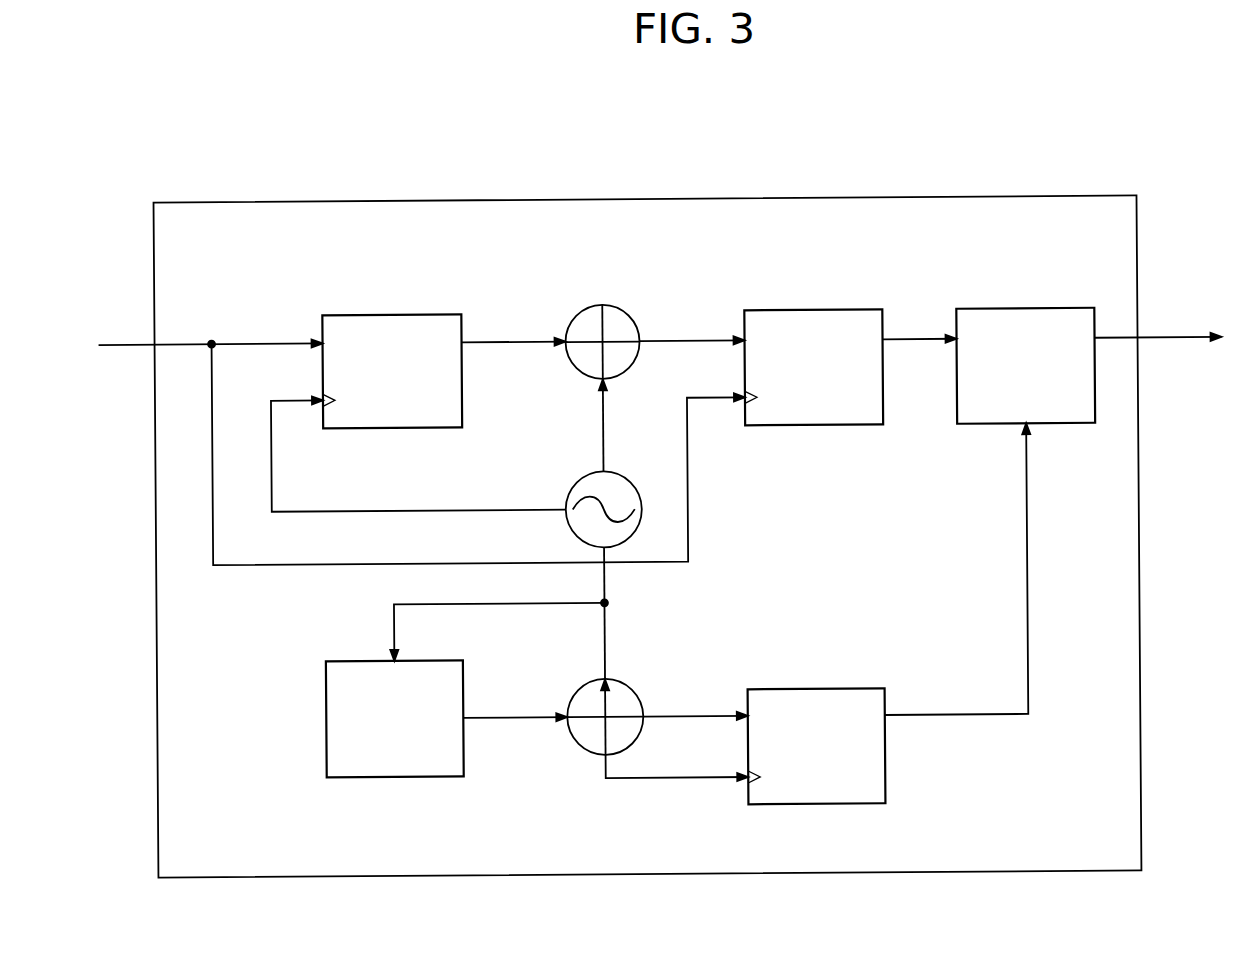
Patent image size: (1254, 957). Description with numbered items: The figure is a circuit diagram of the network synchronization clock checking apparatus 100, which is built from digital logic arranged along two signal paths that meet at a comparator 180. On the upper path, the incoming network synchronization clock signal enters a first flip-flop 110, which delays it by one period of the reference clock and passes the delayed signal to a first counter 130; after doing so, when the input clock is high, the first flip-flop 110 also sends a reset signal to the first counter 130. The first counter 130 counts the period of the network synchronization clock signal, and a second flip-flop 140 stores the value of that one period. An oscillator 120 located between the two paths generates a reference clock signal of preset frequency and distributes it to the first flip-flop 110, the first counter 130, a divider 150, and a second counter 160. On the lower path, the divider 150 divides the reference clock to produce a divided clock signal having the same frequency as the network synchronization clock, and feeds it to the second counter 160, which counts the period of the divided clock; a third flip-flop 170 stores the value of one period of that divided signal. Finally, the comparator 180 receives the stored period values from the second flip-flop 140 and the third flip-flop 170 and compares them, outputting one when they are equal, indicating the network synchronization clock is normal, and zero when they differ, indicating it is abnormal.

The network synchronization clock checking apparatus 100 is at (995, 199).
The first flip-flop 110 is at (428, 313).
The oscillator 120 is at (632, 482).
The first counter 130 is at (630, 315).
The second flip-flop 140 is at (850, 311).
The divider 150 is at (349, 659).
The second counter 160 is at (634, 690).
The third flip-flop 170 is at (851, 690).
The comparator 180 is at (1060, 311).